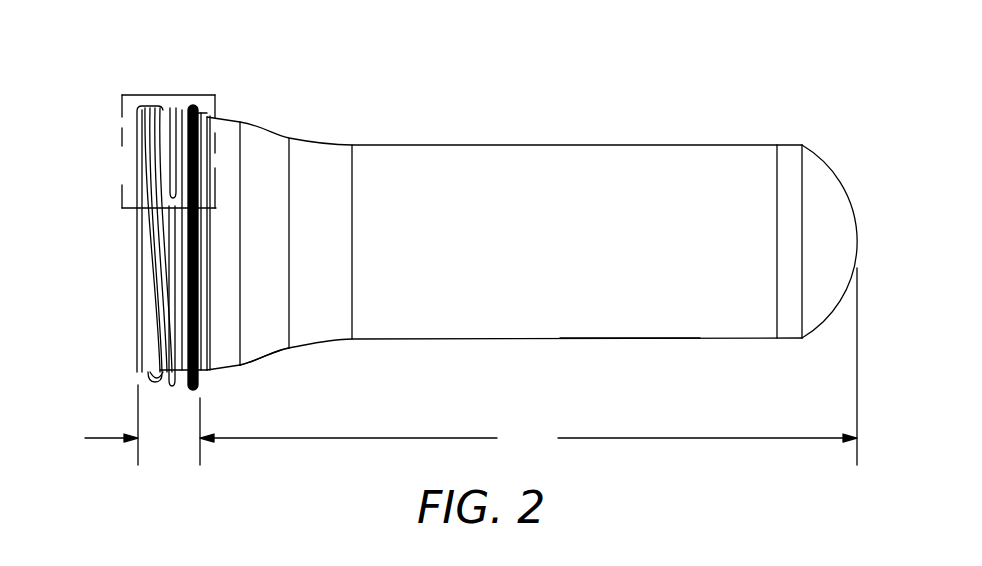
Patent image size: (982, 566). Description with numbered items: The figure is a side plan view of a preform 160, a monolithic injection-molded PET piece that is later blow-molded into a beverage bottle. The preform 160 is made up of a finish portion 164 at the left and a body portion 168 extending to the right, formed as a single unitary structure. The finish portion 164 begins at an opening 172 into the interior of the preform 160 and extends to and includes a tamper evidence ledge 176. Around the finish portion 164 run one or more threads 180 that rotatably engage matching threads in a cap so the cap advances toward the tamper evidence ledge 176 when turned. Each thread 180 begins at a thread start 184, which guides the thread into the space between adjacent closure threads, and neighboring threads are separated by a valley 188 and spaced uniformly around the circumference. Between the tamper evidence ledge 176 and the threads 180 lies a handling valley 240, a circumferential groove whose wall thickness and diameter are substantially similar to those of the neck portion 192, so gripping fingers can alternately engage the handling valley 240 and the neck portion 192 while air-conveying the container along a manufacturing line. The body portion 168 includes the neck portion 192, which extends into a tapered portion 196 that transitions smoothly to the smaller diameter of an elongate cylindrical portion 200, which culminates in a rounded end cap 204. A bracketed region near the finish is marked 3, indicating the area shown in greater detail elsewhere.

The preform 160 is at (528, 106).
The finish portion 164 is at (142, 425).
The body portion 168 is at (528, 366).
The opening 172 is at (118, 290).
The tamper evidence ledge 176 is at (190, 104).
The threads 180 is at (165, 104).
The thread start 184 is at (165, 177).
The valley 188 is at (163, 180).
The neck portion 192 is at (214, 112).
The tapered portion 196 is at (270, 356).
The cylindrical portion 200 is at (612, 340).
The end cap 204 is at (858, 240).
The handling valley 240 is at (181, 113).
The FIG. 3 detail region 3 is at (110, 215).